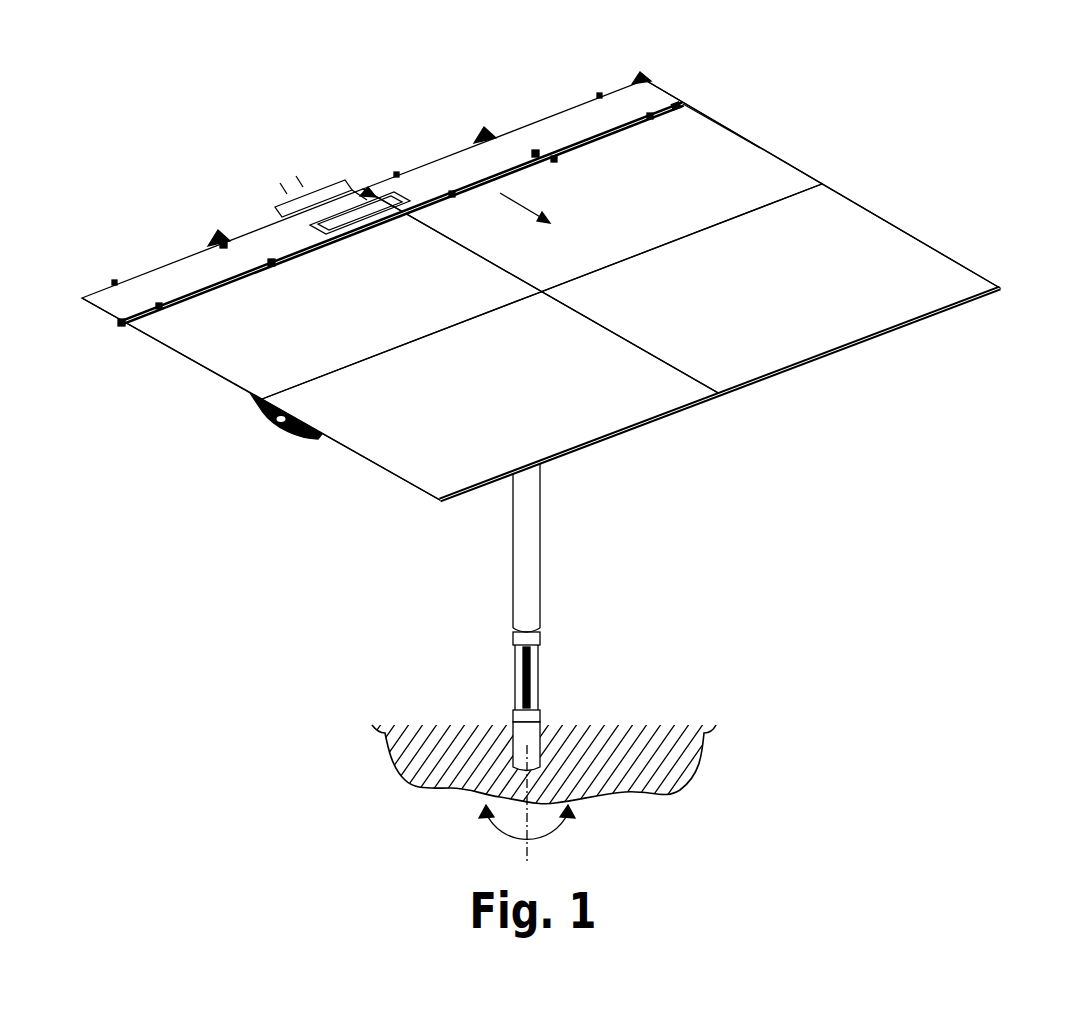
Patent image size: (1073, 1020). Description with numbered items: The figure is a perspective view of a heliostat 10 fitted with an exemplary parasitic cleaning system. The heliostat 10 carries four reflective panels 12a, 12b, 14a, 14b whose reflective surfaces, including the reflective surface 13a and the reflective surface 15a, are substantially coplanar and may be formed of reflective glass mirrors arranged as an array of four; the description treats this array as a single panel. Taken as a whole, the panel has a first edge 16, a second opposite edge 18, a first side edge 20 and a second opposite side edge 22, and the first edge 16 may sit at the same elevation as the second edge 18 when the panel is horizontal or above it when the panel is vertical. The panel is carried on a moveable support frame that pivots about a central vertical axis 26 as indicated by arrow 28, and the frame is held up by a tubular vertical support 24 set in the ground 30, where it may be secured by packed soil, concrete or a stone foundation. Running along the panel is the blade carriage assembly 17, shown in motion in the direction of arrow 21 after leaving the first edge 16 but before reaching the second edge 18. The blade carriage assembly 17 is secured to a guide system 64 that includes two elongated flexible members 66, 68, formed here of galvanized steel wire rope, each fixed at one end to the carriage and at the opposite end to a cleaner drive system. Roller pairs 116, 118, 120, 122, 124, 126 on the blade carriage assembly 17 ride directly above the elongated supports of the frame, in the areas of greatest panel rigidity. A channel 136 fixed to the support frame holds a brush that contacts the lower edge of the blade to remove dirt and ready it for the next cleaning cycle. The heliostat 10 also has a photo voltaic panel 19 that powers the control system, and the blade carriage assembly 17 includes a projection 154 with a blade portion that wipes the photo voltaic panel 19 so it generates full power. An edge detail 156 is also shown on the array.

The heliostat 10 is at (879, 128).
The reflective panel 12a is at (324, 311).
The reflective panel 12b is at (469, 397).
The reflective surface 13a is at (548, 430).
The reflective panel 14a is at (582, 226).
The reflective panel 14b is at (749, 289).
The reflective surface 15a is at (800, 333).
The first edge 16 is at (560, 112).
The blade carriage assembly 17 is at (634, 106).
The second opposite edge 18 is at (935, 318).
The photo voltaic panel 19 is at (328, 192).
The first side edge 20 is at (228, 373).
The arrow 21 is at (525, 203).
The second opposite side edge 22 is at (923, 242).
The vertical support 24 is at (530, 583).
The central vertical axis 26 is at (530, 858).
The arrow 28 is at (493, 832).
The ground 30 is at (622, 747).
The guide system 64 is at (478, 124).
The elongated flexible member 66 is at (224, 246).
The elongated flexible member 68 is at (537, 154).
The roller pair 116 is at (133, 330).
The upper roller pair 118 is at (272, 266).
The upper roller pair 120 is at (379, 236).
The upper roller pair 122 is at (453, 199).
The upper roller pair 124 is at (553, 162).
The upper roller pair 126 is at (652, 119).
The channel 136 is at (200, 349).
The projection 154 is at (368, 191).
The edge rail 156 is at (745, 146).